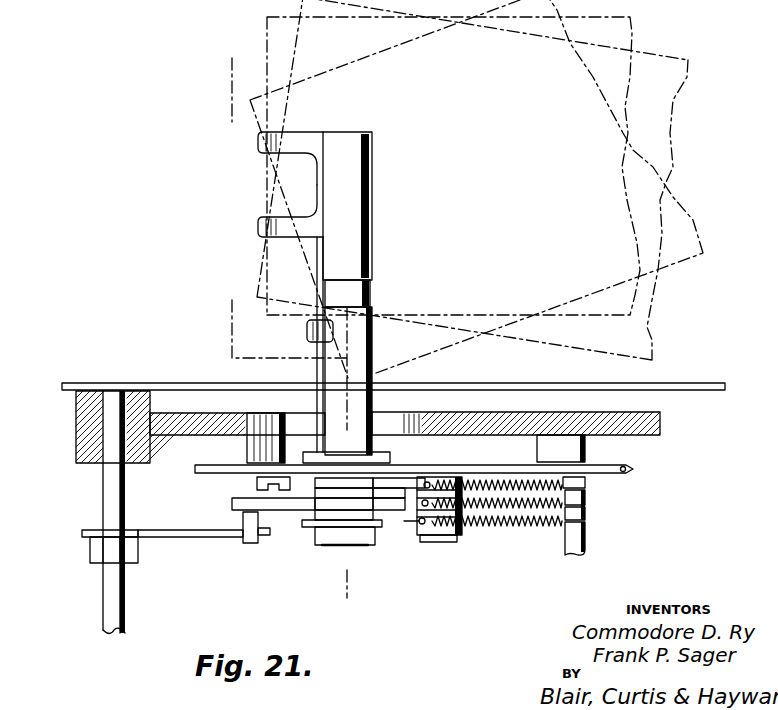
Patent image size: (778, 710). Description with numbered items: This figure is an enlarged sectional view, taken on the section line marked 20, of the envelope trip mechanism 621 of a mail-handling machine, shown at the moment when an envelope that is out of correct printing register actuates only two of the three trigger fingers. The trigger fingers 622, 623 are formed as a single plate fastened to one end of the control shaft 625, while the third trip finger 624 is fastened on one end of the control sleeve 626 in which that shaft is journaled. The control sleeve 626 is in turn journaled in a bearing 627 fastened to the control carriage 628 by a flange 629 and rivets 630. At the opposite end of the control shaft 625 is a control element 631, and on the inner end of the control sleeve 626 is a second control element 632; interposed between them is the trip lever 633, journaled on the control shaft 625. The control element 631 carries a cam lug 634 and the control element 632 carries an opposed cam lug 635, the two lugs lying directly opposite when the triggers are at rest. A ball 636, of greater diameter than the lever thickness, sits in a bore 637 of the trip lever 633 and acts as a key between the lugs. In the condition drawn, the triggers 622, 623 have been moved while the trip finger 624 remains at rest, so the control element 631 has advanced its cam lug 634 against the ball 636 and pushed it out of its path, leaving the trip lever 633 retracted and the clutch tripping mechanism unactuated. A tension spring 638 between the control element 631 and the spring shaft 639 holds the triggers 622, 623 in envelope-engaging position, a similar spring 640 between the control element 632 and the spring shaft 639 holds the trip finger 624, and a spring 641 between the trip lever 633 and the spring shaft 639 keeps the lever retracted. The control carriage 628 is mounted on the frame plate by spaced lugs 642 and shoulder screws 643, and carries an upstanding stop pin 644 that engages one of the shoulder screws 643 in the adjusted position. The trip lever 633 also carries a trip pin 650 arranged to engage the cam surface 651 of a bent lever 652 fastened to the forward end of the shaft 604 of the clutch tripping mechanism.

The section line 20- 20 is at (200, 68).
The shaft 604 is at (108, 595).
The holder assembly 621 is at (206, 333).
The trigger finger 622 is at (258, 143).
The trigger finger 623 is at (258, 224).
The trip finger 624 is at (308, 331).
The control shaft 625 is at (355, 172).
The control sleeve 626 is at (357, 288).
The bearing 627 is at (330, 369).
The control carriage 628 is at (197, 470).
The flange 629 is at (380, 450).
The rivets 630 is at (313, 452).
The control element 631 is at (309, 530).
The control element 632 is at (387, 489).
The trip lever 633 is at (233, 505).
The cam lug 634 is at (400, 520).
The cam lug 635 is at (410, 490).
The ball 636 is at (385, 525).
The bore 637 is at (375, 500).
The tension spring 638 is at (510, 528).
The spring shaft 639 is at (585, 540).
The spring 640 is at (517, 480).
The spring 641 is at (585, 510).
The lugs 642 is at (258, 445).
The shoulder screws 643 is at (258, 484).
The stop pin 644 is at (630, 467).
The trip pin 650 is at (246, 541).
The cam surface 651 is at (206, 540).
The bent lever 652 is at (98, 533).